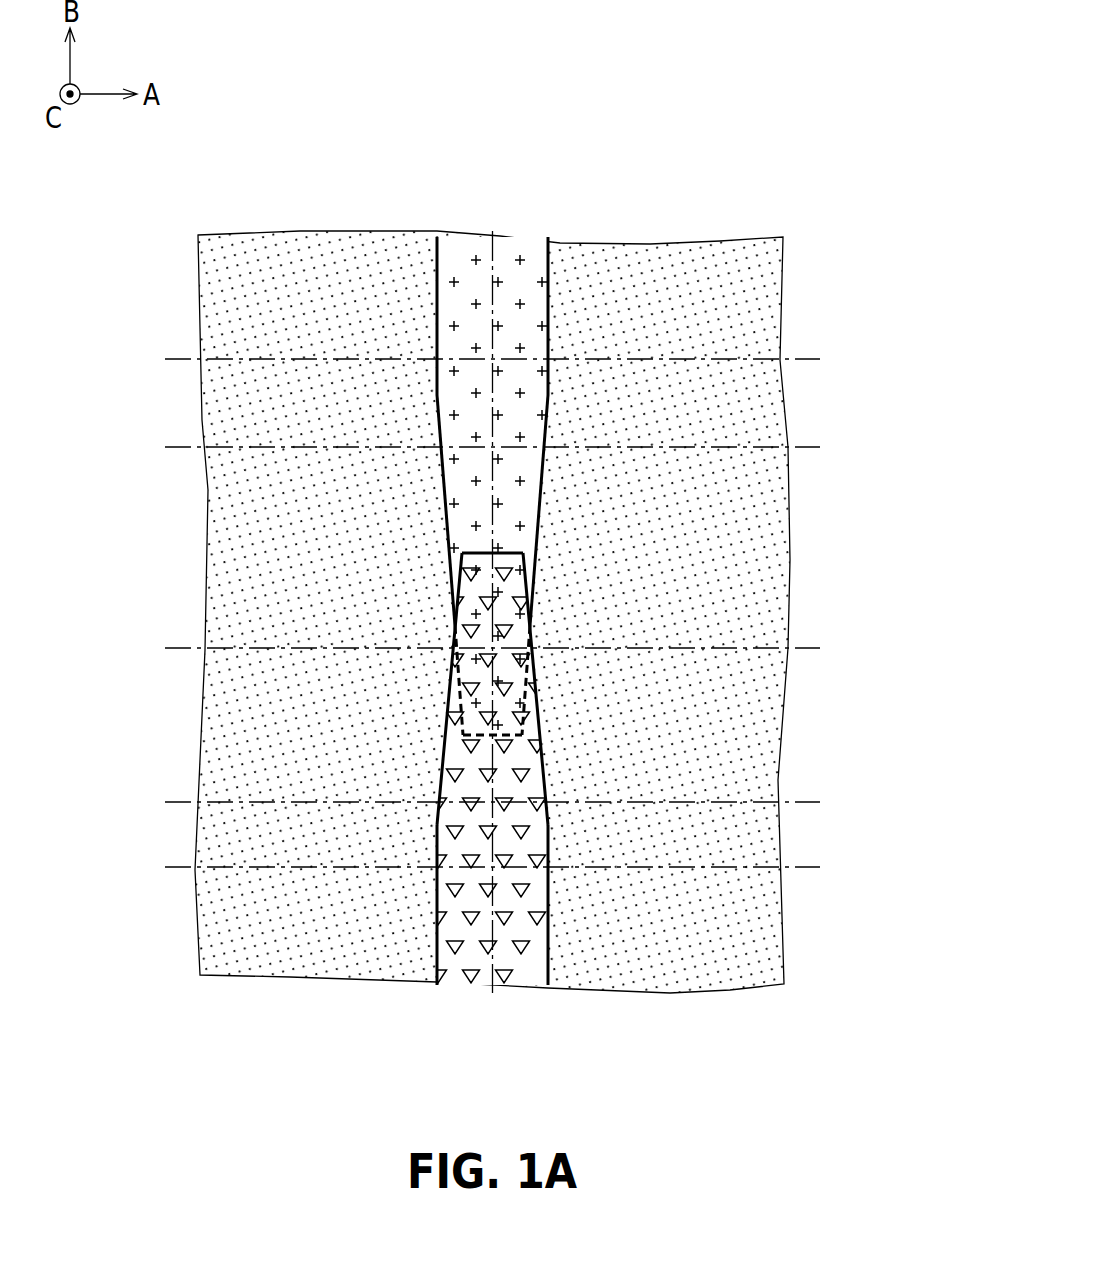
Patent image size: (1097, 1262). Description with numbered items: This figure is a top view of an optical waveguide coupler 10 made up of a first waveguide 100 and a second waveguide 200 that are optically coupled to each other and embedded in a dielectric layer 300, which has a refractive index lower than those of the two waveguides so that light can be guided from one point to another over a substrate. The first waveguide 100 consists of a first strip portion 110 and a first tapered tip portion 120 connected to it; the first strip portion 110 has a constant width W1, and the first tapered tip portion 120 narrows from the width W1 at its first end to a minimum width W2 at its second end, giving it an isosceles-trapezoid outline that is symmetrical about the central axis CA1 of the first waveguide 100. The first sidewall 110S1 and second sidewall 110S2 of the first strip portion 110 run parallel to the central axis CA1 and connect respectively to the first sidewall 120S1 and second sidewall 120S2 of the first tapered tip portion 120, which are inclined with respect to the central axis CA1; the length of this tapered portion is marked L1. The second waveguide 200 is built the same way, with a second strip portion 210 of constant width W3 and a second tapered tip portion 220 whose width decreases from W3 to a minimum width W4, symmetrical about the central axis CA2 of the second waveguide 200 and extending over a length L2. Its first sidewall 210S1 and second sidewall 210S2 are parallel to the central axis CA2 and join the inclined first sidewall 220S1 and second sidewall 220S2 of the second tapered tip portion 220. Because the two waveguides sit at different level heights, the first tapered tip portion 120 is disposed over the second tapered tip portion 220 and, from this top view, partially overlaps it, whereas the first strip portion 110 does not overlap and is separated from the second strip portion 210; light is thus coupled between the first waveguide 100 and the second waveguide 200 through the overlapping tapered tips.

The optical waveguide coupler 10 is at (521, 551).
The first waveguide 100 is at (757, 6).
The first strip portion 110 is at (350, 825).
The first tapered tip portion 120 is at (437, 825).
The second waveguide 200 is at (910, 6).
The second strip portion 210 is at (548, 245).
The second tapered tip portion 220 is at (548, 395).
The dielectric layer 300 is at (768, 923).
The first sidewall of the first strip portion 110S1 is at (562, 951).
The second sidewall of the first strip portion 110S2 is at (423, 951).
The first sidewall of the first tapered tip portion 120S1 is at (556, 780).
The second sidewall of the first tapered tip portion 120S2 is at (429, 780).
The first sidewall of the second strip portion 210S1 is at (562, 283).
The second sidewall of the second strip portion 210S2 is at (423, 283).
The first sidewall of the second tapered tip portion 220S1 is at (553, 521).
The second sidewall of the second tapered tip portion 220S2 is at (432, 521).
The central axis of the first waveguide CA1 is at (492, 993).
The central axis of the second waveguide CA2 is at (492, 231).
The width of the first strip portion W1 is at (437, 997).
The width of the second end of the first tapered tip portion W2 is at (522, 553).
The width of the second strip portion W3 is at (548, 230).
The width of the second end of the second tapered tip portion W4 is at (522, 792).
The length L1 is at (387, 553).
The length L2 is at (603, 395).